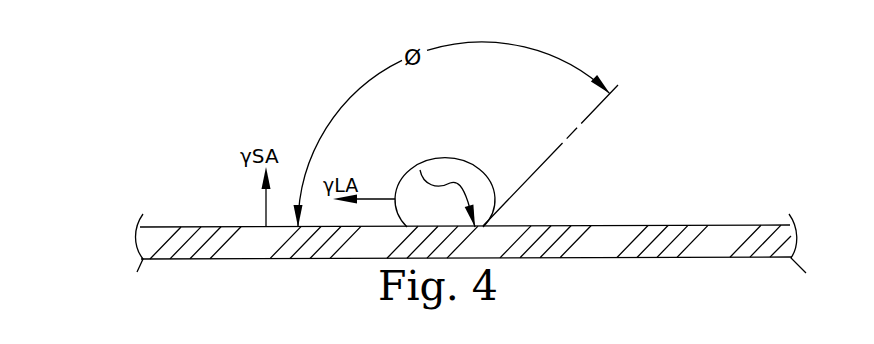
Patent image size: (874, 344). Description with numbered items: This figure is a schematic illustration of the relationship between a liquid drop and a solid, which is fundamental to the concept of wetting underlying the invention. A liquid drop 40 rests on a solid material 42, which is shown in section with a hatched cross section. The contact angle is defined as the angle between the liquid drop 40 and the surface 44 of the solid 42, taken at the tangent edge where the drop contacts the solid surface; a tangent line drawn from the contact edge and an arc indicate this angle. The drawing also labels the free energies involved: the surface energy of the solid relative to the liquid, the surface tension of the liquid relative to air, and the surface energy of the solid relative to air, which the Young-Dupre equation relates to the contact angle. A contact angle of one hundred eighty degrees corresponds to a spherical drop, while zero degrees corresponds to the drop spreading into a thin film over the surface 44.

The liquid drop 40 is at (427, 158).
The solid material 42 is at (223, 213).
The surface of the solid 44 is at (742, 225).